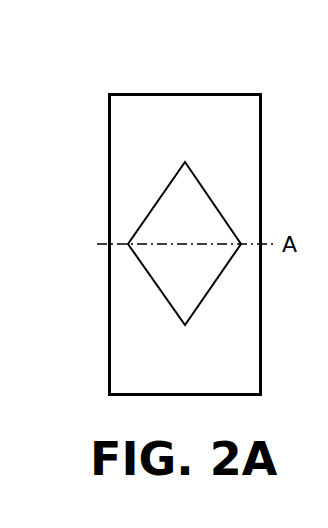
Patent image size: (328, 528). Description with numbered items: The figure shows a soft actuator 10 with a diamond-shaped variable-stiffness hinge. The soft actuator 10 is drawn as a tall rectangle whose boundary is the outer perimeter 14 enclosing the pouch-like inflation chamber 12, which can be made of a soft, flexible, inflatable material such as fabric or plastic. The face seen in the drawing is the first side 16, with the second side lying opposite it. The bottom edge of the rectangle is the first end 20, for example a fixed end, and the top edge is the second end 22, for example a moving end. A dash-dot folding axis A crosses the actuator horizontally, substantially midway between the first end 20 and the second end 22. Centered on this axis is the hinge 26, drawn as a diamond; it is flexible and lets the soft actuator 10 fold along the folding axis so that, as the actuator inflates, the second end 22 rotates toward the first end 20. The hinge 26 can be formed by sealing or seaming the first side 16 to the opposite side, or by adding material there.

The soft actuator 10 is at (110, 115).
The inflation chamber 12 is at (110, 175).
The outer perimeter 14 is at (110, 289).
The first side 16 is at (135, 358).
The first end 20 is at (233, 394).
The second end 22 is at (205, 94).
The hinge 26 is at (210, 290).